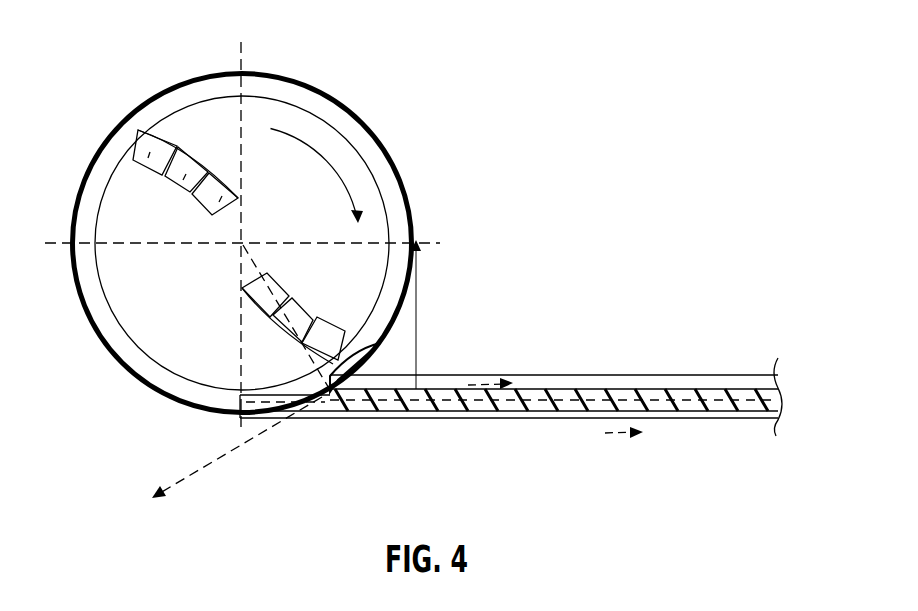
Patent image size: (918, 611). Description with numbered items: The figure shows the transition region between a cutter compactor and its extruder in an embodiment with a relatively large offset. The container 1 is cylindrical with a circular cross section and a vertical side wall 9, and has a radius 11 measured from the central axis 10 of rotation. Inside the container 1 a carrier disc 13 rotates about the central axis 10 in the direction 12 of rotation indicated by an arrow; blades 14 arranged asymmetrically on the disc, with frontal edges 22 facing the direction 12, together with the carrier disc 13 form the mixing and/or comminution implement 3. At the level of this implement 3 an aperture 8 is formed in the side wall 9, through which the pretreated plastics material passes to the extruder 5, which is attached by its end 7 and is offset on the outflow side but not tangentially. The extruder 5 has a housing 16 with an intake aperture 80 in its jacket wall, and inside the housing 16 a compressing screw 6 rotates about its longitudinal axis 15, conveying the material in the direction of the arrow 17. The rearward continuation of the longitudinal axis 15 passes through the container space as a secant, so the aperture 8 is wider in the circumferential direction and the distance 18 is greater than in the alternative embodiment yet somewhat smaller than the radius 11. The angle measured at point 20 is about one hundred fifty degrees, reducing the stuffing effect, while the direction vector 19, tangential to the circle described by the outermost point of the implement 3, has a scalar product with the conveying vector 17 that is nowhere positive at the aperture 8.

The container 1 is at (118, 54).
The mixing and/or comminution implement 3 is at (145, 323).
The extruder 5 is at (598, 345).
The screw 6 is at (563, 412).
The end of the extruder 7 is at (306, 393).
The aperture 8 is at (242, 390).
The side wall 9 is at (257, 72).
The central axis of rotation 10 is at (244, 242).
The radius of the container 11 is at (417, 243).
The direction of rotation 12 is at (323, 158).
The carrier disc 13 is at (187, 302).
The blades 14 is at (148, 157).
The longitudinal axis 15 is at (622, 402).
The housing 16 is at (712, 418).
The direction of conveying 17 is at (490, 384).
The distance 18 is at (416, 323).
The direction vector 19 is at (190, 477).
The point 20 is at (340, 375).
The frontal edges 22 is at (243, 300).
The intake aperture 80 is at (247, 419).